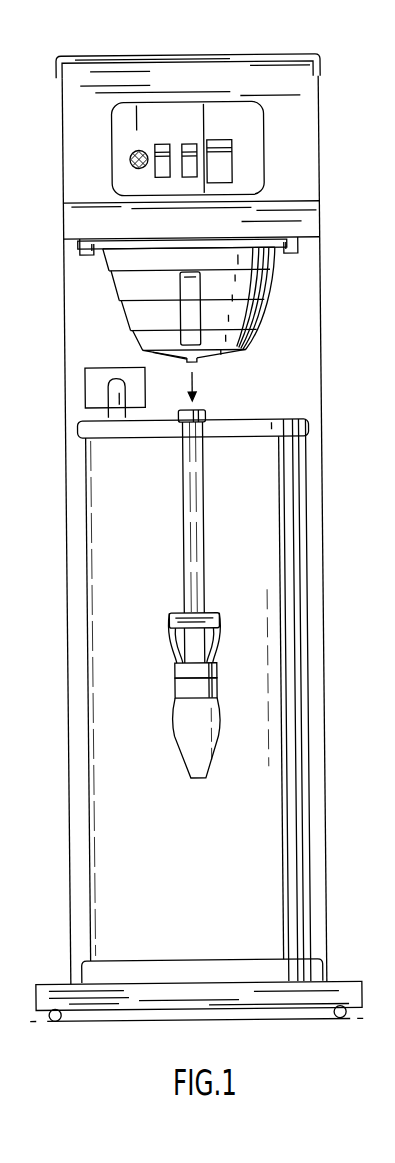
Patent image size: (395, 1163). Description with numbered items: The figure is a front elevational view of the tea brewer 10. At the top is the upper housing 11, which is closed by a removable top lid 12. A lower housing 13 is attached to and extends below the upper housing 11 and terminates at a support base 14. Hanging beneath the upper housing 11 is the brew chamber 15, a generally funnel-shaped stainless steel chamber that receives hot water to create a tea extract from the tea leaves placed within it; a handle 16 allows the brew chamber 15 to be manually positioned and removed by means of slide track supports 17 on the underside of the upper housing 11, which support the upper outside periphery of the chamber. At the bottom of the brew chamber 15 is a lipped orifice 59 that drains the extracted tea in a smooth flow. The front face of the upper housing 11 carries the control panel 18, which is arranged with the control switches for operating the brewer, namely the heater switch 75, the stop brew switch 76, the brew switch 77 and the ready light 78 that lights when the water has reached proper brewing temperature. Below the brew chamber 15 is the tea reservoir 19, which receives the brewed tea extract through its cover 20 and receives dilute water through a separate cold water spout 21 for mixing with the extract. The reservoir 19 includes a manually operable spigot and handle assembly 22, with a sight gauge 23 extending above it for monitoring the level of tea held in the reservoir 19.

The brewer 10 is at (259, 44).
The upper housing 11 is at (305, 91).
The top lid 12 is at (145, 57).
The lower housing 13 is at (305, 341).
The support base 14 is at (253, 1003).
The brew chamber 15 is at (253, 297).
The handle 16 is at (193, 327).
The slide track supports 17 is at (76, 251).
The control panel 18 is at (264, 158).
The tea reservoir 19 is at (128, 492).
The cover 20 is at (285, 420).
The cold water spout 21 is at (108, 396).
The spigot and handle assembly 22 is at (166, 699).
The sight gauge 23 is at (184, 573).
The lipped orifice 59 is at (197, 363).
The heater switch 75 is at (222, 152).
The stop brew switch 76 is at (187, 144).
The brew switch 77 is at (163, 144).
The ready light 78 is at (129, 159).